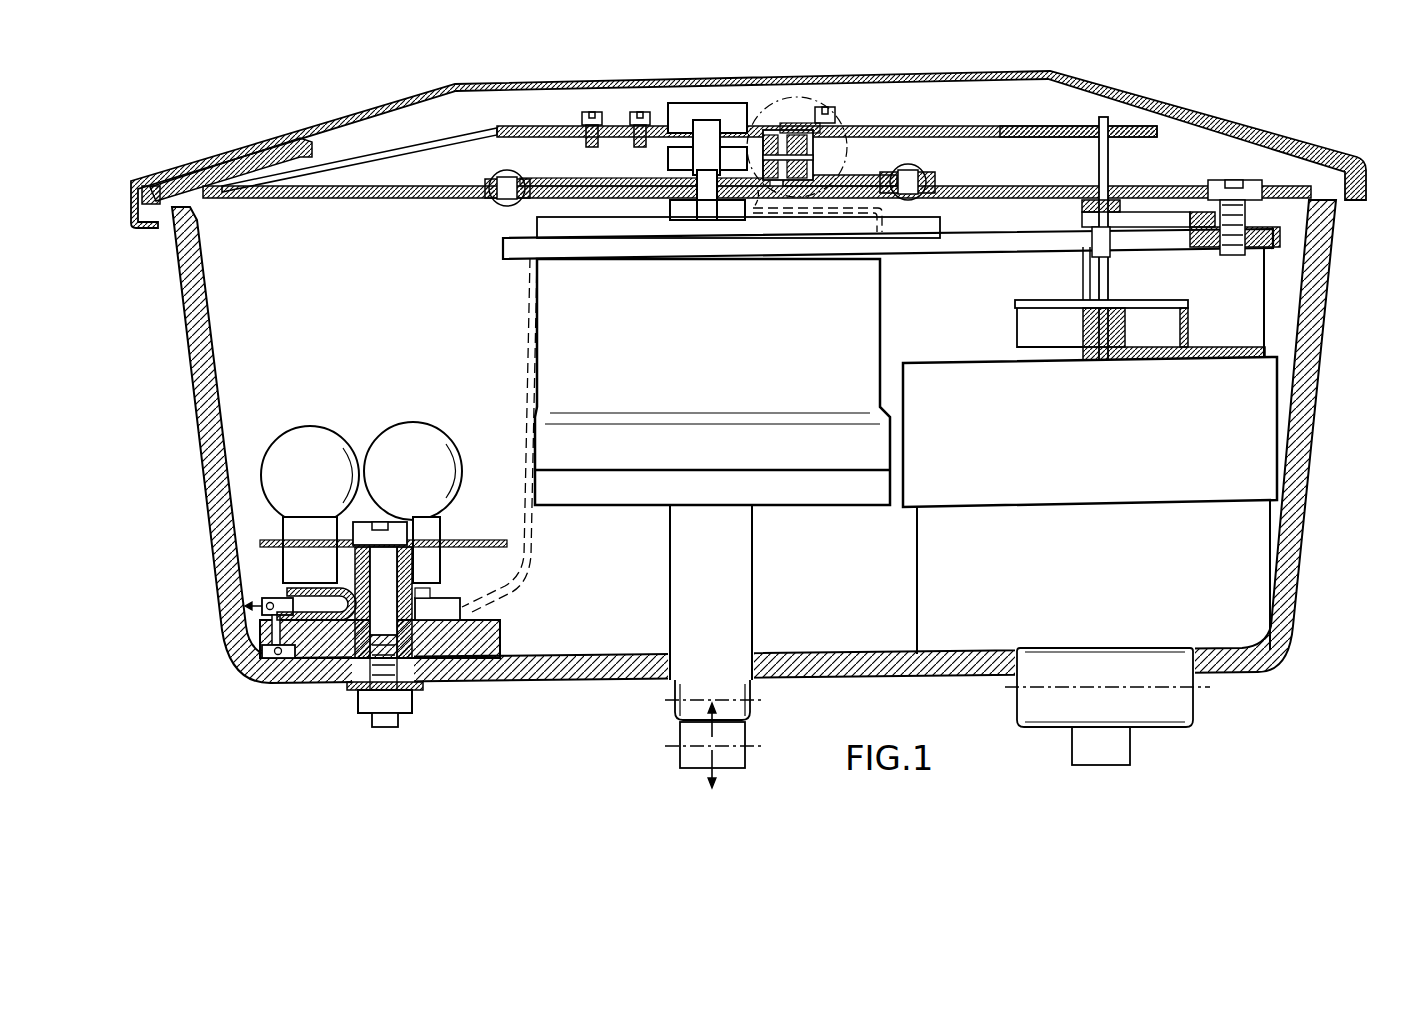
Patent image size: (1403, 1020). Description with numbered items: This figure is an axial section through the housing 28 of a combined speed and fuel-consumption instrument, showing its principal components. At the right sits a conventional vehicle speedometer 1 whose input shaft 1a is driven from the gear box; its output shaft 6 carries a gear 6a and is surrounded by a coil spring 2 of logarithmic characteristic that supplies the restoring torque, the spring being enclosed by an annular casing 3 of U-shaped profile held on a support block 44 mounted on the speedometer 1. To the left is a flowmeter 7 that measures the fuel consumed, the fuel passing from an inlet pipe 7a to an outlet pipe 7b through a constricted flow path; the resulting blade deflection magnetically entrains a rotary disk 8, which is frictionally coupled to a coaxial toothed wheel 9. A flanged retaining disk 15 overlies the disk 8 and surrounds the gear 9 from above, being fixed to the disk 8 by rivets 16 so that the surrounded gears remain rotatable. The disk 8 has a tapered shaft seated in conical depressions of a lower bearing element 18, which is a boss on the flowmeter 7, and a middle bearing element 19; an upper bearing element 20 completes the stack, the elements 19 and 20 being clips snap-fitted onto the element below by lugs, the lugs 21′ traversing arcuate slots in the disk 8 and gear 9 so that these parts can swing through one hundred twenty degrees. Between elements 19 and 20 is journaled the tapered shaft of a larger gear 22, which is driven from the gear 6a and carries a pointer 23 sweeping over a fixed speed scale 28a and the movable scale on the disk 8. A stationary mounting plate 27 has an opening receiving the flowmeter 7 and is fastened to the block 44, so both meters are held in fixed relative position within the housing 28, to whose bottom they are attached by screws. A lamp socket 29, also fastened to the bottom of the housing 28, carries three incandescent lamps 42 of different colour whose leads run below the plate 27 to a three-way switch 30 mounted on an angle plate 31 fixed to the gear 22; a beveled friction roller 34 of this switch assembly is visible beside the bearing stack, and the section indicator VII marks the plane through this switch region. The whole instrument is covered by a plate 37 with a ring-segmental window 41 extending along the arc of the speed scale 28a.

The speedometer 1 is at (1262, 424).
The input shaft 1a is at (1105, 748).
The coil spring 2 is at (1180, 328).
The annular casing 3 is at (1017, 326).
The output shaft 6 is at (1104, 118).
The gear 6a is at (1160, 128).
The flowmeter 7 is at (622, 482).
The inlet pipe 7a is at (745, 708).
The outlet pipe 7b is at (690, 755).
The rotary disk 8 is at (338, 200).
The toothed wheel 9 is at (545, 194).
The flanged retaining disk 15 is at (488, 186).
The rivets 16 is at (915, 176).
The lower bearing element 18 is at (680, 222).
The middle bearing element 19 is at (670, 156).
The upper bearing element 20 is at (680, 104).
The lugs 21′ is at (708, 222).
The larger gear 22 is at (880, 130).
The pointer 23 is at (345, 158).
The stationary mounting plate 27 is at (946, 250).
The housing 28 is at (505, 676).
The fixed scale 28a is at (193, 183).
The lamp socket 29 is at (322, 660).
The three-way switch 30 is at (773, 133).
The angle plate 31 is at (795, 136).
The beveled friction roller 34 is at (800, 198).
The plate 37 is at (1042, 74).
The window 41 is at (242, 150).
The incandescent lamps 42 is at (393, 447).
The support block 44 is at (1083, 264).
The section VII is at (845, 100).